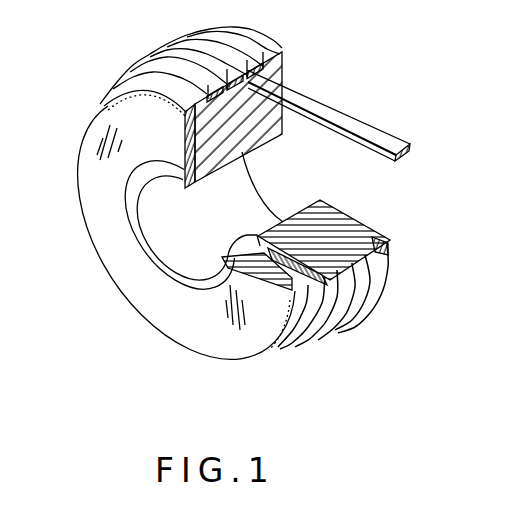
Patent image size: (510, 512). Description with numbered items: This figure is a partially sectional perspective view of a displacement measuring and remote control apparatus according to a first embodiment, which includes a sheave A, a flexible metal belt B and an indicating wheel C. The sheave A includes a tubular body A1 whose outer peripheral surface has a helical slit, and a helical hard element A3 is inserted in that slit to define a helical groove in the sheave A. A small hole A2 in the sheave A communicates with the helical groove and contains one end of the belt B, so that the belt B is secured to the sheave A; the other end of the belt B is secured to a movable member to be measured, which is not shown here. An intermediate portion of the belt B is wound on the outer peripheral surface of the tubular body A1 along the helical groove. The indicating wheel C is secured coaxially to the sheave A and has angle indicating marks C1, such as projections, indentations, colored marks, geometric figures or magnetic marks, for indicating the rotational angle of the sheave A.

The sheave A is at (362, 224).
The tubular body A1 is at (248, 68).
The small hole A2 is at (228, 238).
The helical hard element A3 is at (145, 67).
The flexible metal belt B is at (411, 150).
The indicating wheel C is at (90, 186).
The angle indicating marks C1 is at (278, 349).